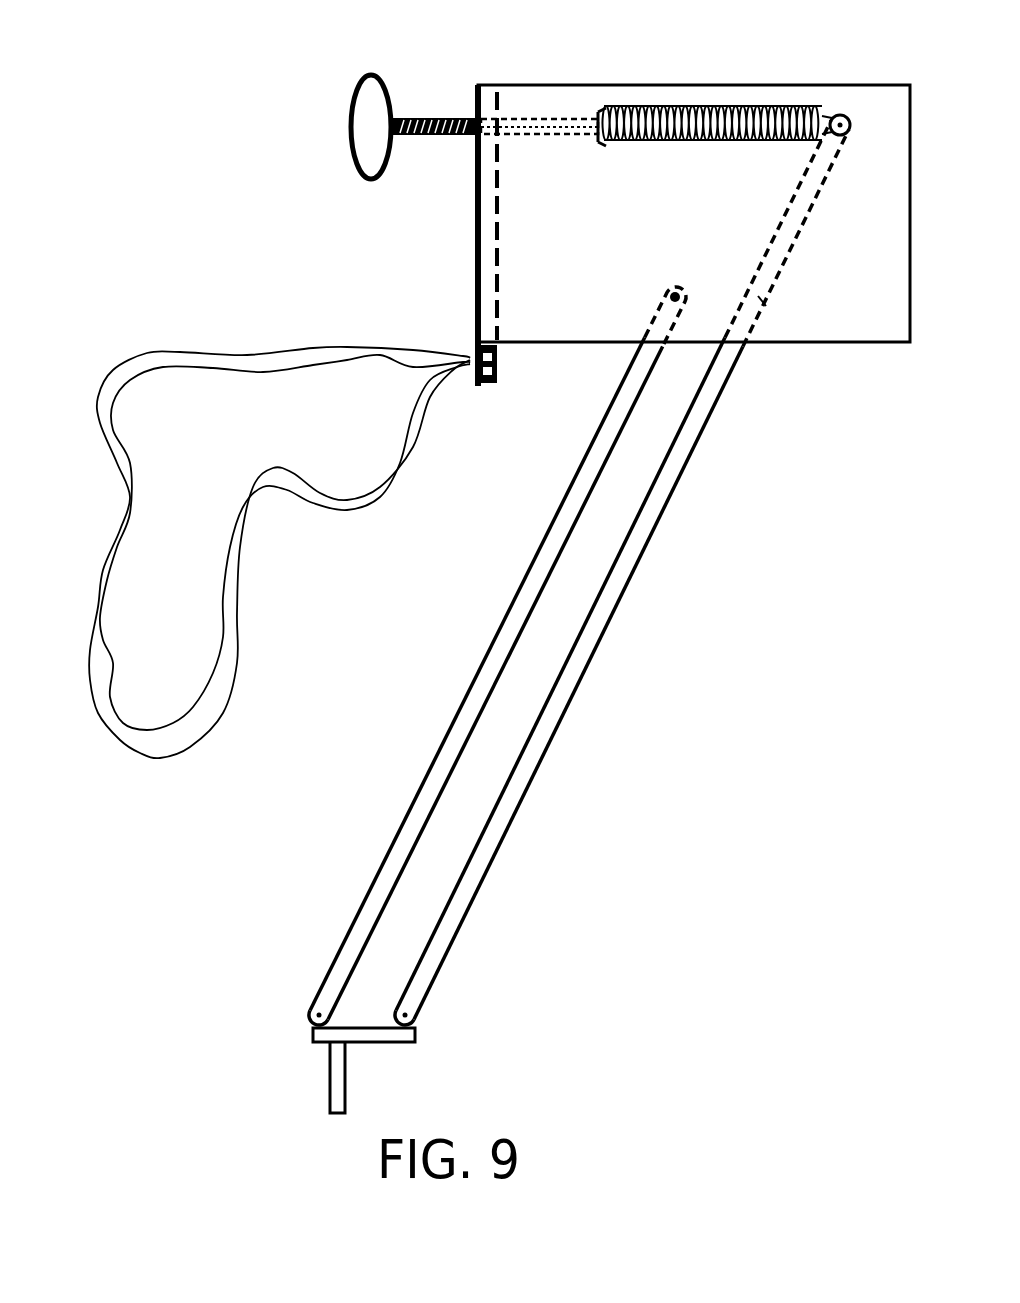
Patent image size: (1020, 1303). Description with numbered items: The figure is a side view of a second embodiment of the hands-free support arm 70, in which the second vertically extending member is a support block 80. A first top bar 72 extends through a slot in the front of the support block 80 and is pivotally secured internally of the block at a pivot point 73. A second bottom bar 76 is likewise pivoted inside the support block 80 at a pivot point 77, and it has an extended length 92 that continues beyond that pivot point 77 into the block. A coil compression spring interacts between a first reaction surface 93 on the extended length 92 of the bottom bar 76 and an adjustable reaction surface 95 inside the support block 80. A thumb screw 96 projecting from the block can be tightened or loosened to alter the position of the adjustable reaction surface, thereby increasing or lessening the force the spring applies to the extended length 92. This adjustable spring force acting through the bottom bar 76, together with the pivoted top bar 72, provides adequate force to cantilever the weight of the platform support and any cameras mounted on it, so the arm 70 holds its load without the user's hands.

The hands-free support arm 70 is at (675, 722).
The first top bar 72 is at (490, 637).
The pivot point of first top bar 73 is at (672, 296).
The second bottom bar 76 is at (541, 757).
The pivot point of second bottom bar 77 is at (762, 300).
The support block 80 is at (572, 242).
The extended length 92 is at (780, 221).
The first reaction surface 93 is at (851, 127).
The adjustable reaction surface 95 is at (603, 110).
The thumb screw 96 is at (350, 156).